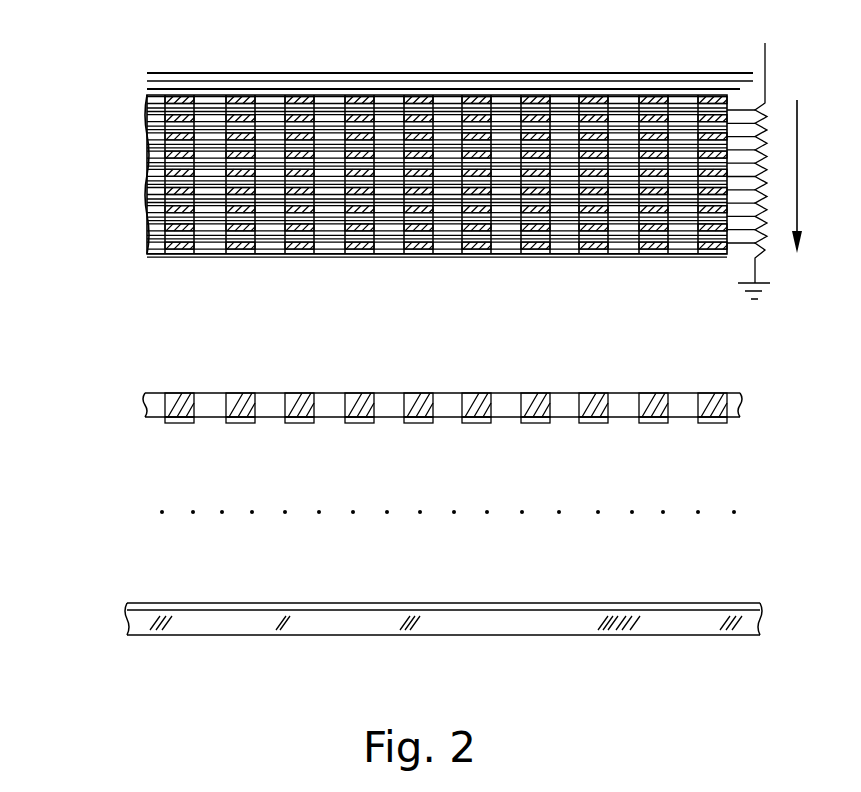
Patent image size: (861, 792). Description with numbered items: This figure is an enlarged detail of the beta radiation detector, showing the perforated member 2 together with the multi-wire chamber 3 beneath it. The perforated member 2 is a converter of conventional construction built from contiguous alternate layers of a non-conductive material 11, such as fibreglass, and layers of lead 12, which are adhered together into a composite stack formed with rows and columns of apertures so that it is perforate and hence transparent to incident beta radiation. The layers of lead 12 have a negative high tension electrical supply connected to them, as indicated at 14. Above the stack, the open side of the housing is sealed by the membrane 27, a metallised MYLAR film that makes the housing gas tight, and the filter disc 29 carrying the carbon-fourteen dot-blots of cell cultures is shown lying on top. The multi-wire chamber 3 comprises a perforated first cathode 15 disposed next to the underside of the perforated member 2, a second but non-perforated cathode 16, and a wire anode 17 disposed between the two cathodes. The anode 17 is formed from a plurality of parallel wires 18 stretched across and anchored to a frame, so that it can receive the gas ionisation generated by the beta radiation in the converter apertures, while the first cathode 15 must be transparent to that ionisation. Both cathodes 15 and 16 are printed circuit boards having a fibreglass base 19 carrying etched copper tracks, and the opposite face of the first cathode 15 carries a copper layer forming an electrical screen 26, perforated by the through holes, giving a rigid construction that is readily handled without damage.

The perforated member 2 is at (118, 187).
The multi-wire chamber 3 is at (106, 406).
The layers of non-conductive material 11 is at (150, 143).
The layers of lead 12 is at (147, 240).
The negative high tension electrical supply connection 14 is at (767, 57).
The first cathode 15 is at (752, 405).
The second cathode 16 is at (767, 622).
The wire anode 17 is at (752, 512).
The parallel wires 18 is at (559, 513).
The base 19 is at (710, 393).
The electrical screen 26 is at (178, 424).
The membrane 27 is at (146, 89).
The filter disc 29 is at (548, 71).